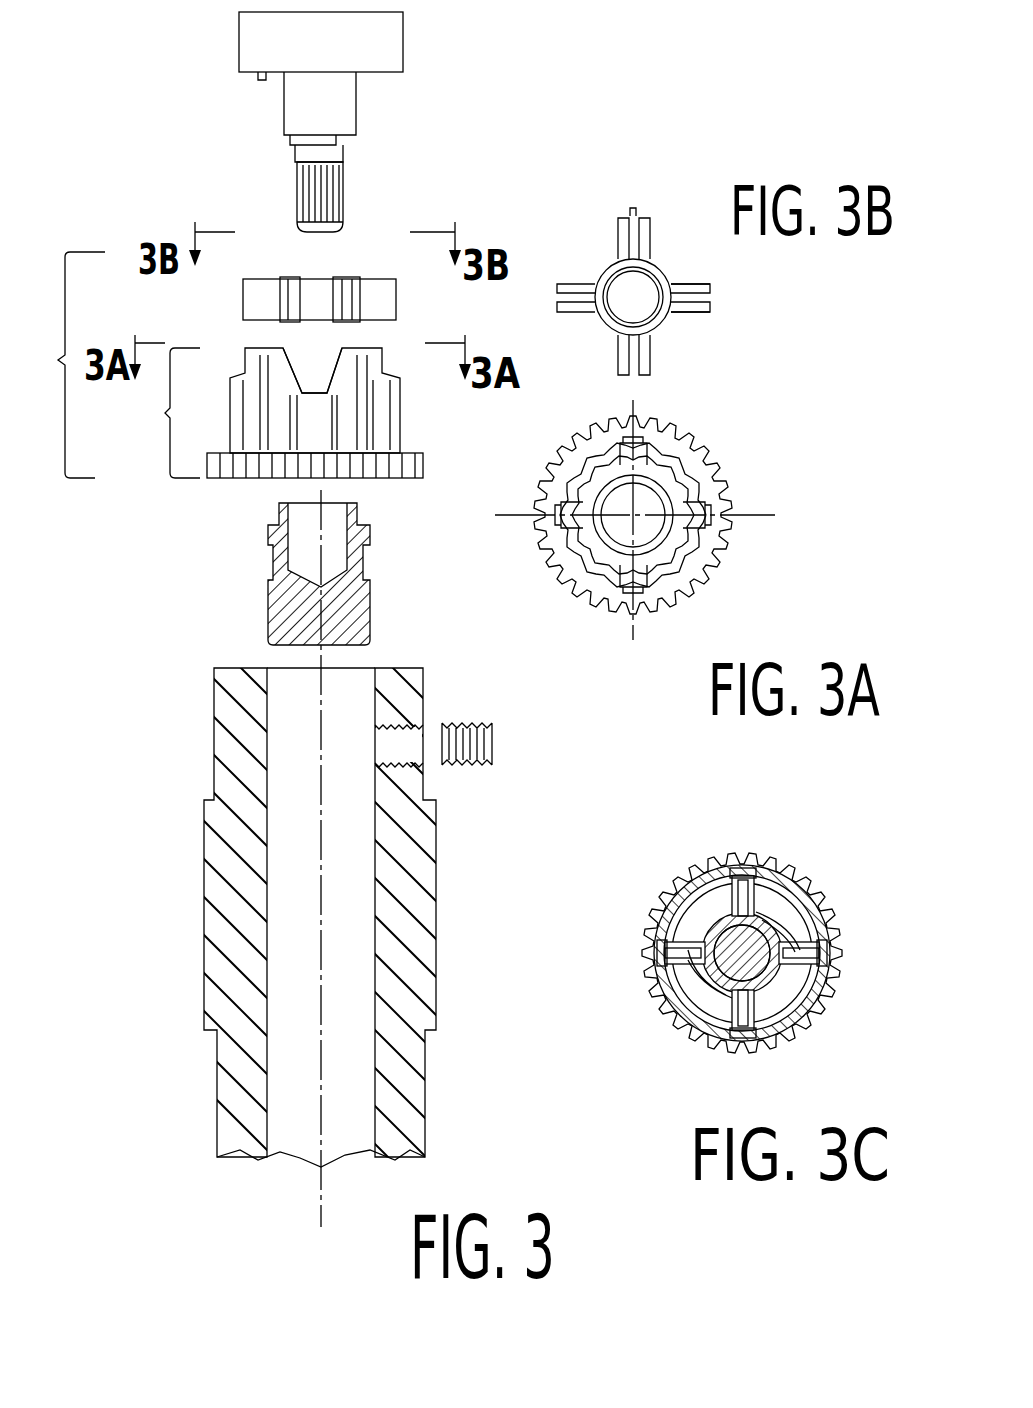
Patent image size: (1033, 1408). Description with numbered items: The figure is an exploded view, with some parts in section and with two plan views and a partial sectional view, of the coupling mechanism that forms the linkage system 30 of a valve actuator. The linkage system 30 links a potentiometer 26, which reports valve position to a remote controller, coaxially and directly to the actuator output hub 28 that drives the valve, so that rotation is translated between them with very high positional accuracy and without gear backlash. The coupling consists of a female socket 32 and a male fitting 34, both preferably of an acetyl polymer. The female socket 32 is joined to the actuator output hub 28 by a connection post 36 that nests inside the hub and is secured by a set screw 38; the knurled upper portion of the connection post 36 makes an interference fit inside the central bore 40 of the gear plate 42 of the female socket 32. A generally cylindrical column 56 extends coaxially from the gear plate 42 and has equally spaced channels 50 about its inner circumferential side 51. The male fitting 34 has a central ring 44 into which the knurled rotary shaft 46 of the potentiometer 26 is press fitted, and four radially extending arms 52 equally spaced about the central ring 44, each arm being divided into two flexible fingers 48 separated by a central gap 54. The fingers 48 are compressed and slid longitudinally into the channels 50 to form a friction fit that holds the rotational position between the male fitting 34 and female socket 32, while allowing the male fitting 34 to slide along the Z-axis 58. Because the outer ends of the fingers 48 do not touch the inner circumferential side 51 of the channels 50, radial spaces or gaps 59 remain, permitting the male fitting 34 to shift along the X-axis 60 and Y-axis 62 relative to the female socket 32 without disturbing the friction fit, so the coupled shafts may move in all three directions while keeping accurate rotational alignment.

In FIG. 3, the potentiometer 26 is at (243, 42).
In FIG. 3, the actuator output hub 28 is at (232, 828).
In FIG. 3, the linkage system 30 is at (61, 365).
In FIG. 3, the female socket 32 is at (263, 413).
In FIG. 3A, the female socket 32 is at (770, 402).
In FIG. 3C, the female socket 32 is at (682, 870).
In FIG. 3, the male fitting 34 is at (243, 297).
In FIG. 3B, the male fitting 34 is at (600, 203).
In FIG. 3C, the male fitting 34 is at (690, 975).
In FIG. 3, the connection post 36 is at (345, 605).
In FIG. 3, the set screw 38 is at (492, 742).
In FIG. 3A, the central bore 40 is at (650, 495).
In FIG. 3, the gear plate 42 is at (215, 480).
In FIG. 3A, the gear plate 42 is at (706, 573).
In FIG. 3C, the gear plate 42 is at (728, 850).
In FIG. 3B, the central ring 44 is at (660, 322).
In FIG. 3C, the central ring 44 is at (792, 1002).
In FIG. 3, the rotary shaft 46 is at (306, 190).
In FIG. 3C, the rotary shaft 46 is at (745, 972).
In FIG. 3B, the flexible fingers 48 is at (618, 238).
In FIG. 3C, the flexible fingers 48 is at (705, 892).
In FIG. 3A, the channels 50 is at (650, 455).
In FIG. 3A, the inner circumferential side 51 is at (605, 450).
In FIG. 3C, the inner circumferential side 51 is at (740, 870).
In FIG. 3B, the radially extending arms 52 is at (724, 284).
In FIG. 3C, the radially extending arms 52 is at (770, 905).
In FIG. 3B, the central gap 54 is at (640, 205).
In FIG. 3, the cylindrical column 56 is at (283, 395).
In FIG. 3C, the cylindrical column 56 is at (670, 925).
In FIG. 3, the Z-axis 58 is at (315, 900).
In FIG. 3C, the radial spaces or gaps 59 is at (758, 874).
In FIG. 3A, the X-axis 60 is at (673, 517).
In FIG. 3A, the Y-axis 62 is at (626, 554).